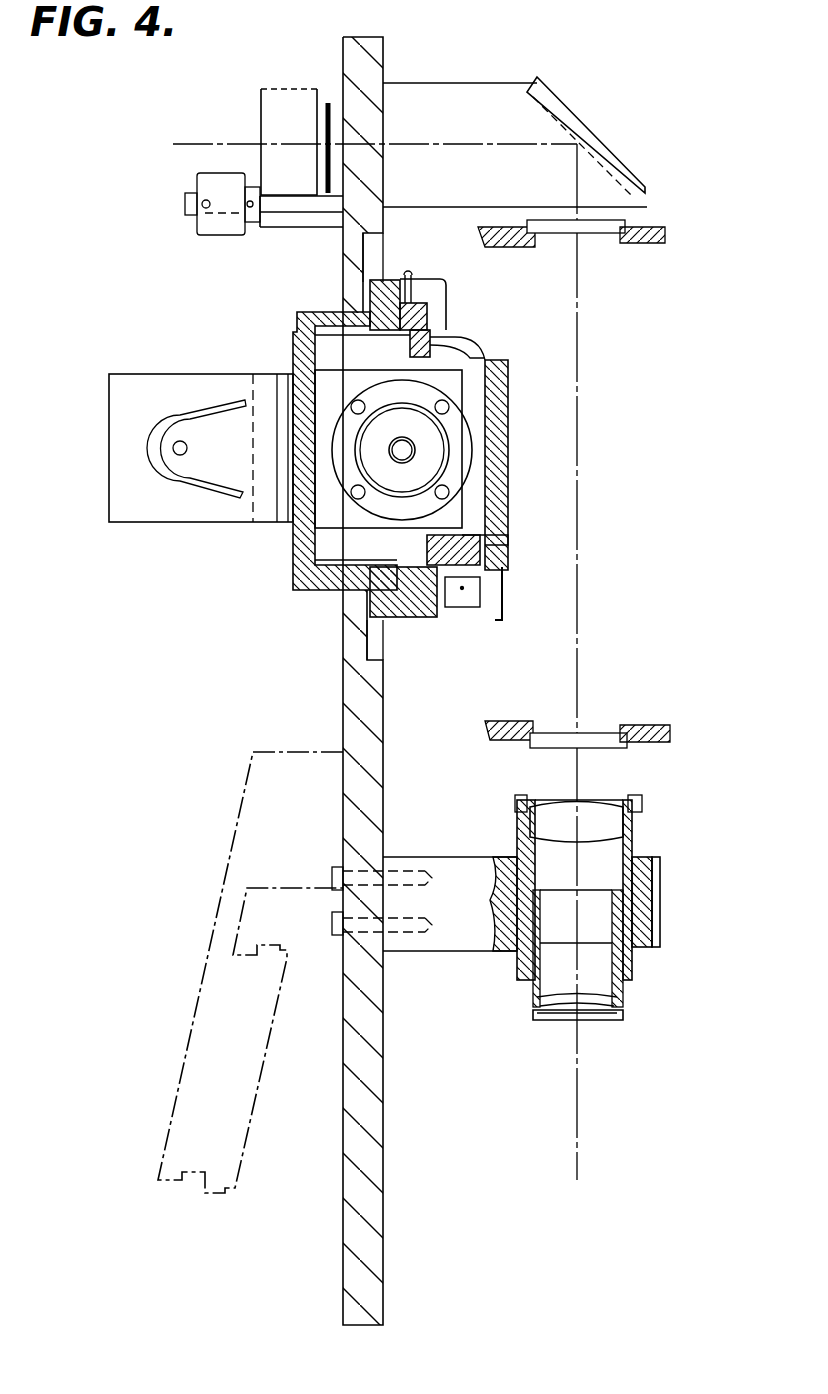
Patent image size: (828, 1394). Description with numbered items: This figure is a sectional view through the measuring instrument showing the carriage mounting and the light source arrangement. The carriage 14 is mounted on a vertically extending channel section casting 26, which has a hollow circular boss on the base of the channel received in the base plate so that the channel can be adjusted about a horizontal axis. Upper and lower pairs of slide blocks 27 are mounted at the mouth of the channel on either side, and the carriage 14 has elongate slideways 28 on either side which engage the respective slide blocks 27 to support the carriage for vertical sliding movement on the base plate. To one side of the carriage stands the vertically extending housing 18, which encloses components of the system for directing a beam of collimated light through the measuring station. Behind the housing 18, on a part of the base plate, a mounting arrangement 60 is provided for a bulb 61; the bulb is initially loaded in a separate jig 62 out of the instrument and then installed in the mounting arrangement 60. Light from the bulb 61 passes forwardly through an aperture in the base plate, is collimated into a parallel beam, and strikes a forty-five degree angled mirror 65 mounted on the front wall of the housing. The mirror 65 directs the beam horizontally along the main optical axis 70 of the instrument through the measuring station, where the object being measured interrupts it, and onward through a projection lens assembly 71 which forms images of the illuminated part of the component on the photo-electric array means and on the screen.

The carriage 14 is at (508, 372).
The housing 18 is at (247, 1148).
The channel section casting 26 is at (293, 338).
The slide blocks 27 is at (427, 308).
The slideways 28 is at (437, 340).
The mounting arrangement 60 is at (222, 218).
The bulb 61 is at (300, 188).
The jig 62 is at (291, 196).
The angled mirror 65 is at (572, 112).
The main optical axis 70 is at (577, 490).
The projection lens assembly 71 is at (592, 878).